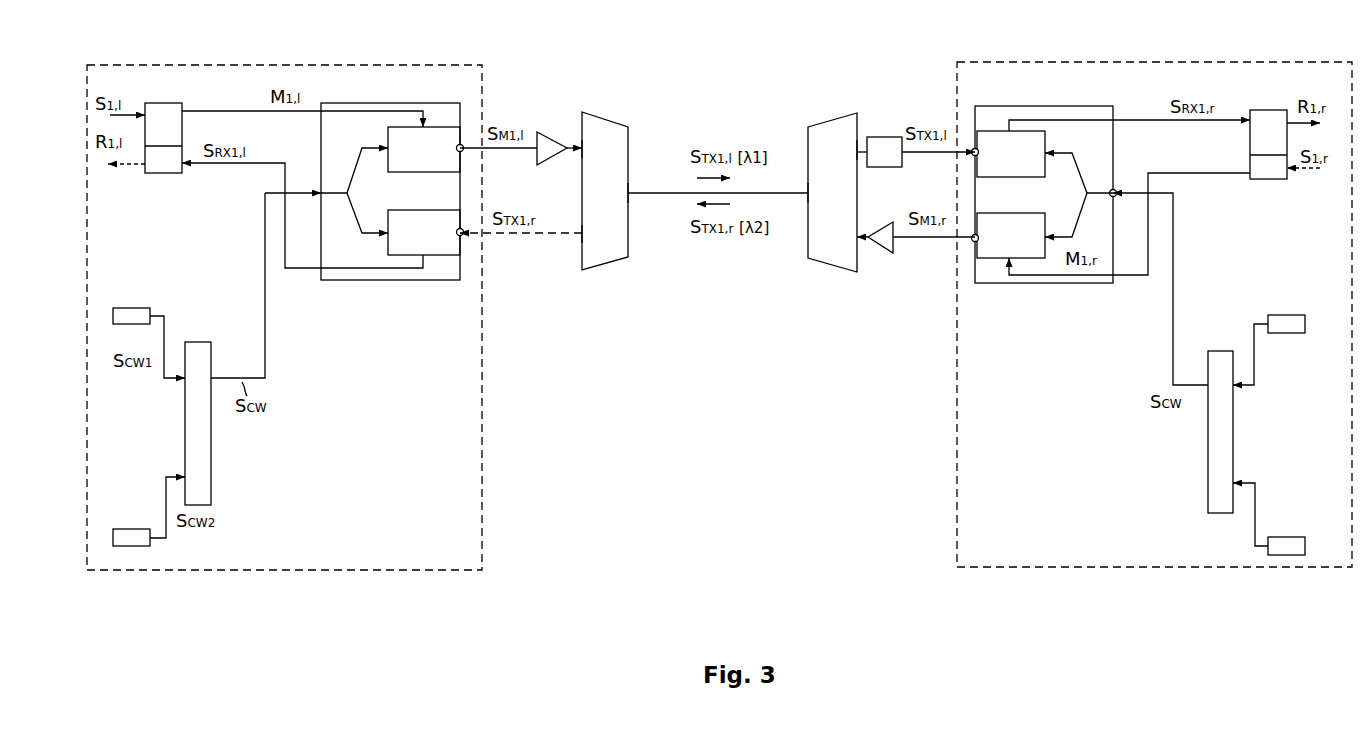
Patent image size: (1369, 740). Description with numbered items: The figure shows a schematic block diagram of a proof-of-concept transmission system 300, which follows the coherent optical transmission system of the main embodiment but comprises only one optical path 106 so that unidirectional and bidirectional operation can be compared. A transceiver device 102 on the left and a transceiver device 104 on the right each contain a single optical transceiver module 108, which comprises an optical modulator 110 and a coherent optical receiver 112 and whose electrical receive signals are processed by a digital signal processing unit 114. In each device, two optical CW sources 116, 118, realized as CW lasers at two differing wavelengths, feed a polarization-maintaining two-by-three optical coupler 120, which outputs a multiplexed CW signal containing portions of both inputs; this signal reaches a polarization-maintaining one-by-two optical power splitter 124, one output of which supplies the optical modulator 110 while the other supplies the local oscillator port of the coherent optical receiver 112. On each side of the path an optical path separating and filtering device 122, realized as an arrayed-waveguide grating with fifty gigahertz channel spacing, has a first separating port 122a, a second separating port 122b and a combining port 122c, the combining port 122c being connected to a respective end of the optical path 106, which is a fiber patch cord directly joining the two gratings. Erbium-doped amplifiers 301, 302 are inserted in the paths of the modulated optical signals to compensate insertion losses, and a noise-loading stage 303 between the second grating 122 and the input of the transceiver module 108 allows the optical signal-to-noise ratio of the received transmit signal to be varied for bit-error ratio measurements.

The optical transceiver device 102 is at (373, 63).
The optical transceiver device 104 is at (1210, 60).
The optical path 106 is at (655, 190).
The optical transceiver module 108 is at (442, 117).
The optical modulator 110 is at (716, 192).
The coherent optical receiver 112 is at (716, 193).
The digital signal processing unit 114 is at (716, 141).
The optical CW source 116 is at (136, 313).
The optical CW source 118 is at (136, 537).
The optical 2×3 coupler 120 is at (193, 428).
The optical path separating and filtering device 122 is at (719, 192).
The first separating port 122a is at (580, 138).
The second separating port 122b is at (580, 237).
The combining port 122c is at (632, 197).
The polarization-maintaining 1×2 optical power splitter 124 is at (355, 190).
The proof-of-concept transmission system 300 is at (728, 112).
The erbium-doped amplifier 301 is at (551, 160).
The erbium-doped amplifier 302 is at (892, 255).
The noise-loading stage 303 is at (903, 168).